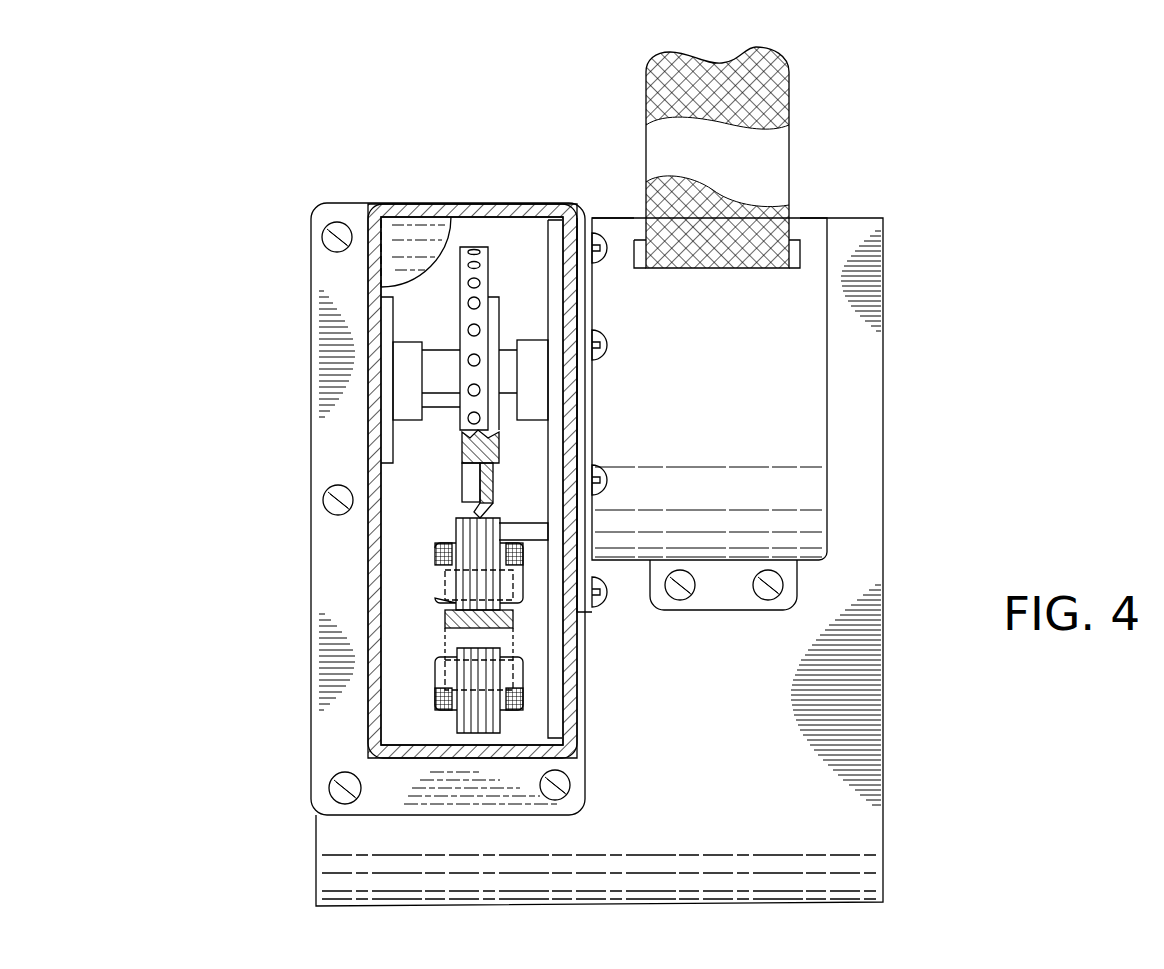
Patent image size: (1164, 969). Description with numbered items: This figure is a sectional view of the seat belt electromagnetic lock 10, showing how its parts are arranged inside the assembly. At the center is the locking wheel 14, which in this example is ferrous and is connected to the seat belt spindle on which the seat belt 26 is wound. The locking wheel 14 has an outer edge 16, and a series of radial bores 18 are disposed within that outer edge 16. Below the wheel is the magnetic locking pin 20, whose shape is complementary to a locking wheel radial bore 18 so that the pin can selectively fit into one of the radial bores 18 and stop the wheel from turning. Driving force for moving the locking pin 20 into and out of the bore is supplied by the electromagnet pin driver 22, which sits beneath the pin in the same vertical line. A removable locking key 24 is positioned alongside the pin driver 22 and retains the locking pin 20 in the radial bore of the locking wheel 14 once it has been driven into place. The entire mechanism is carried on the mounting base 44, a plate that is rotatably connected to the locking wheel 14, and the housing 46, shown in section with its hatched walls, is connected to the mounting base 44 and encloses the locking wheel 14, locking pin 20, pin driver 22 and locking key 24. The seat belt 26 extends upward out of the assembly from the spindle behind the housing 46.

The seat belt electromagnetic lock 10 is at (532, 143).
The locking wheel 14 is at (470, 318).
The outer edge 16 is at (472, 247).
The radial bores 18 is at (474, 334).
The magnetic locking pin 20 is at (463, 503).
The electromagnet pin driver 22 is at (442, 592).
The removable locking key 24 is at (513, 627).
The seat belt 26 is at (766, 142).
The mounting base 44 is at (805, 717).
The housing 46 is at (377, 723).